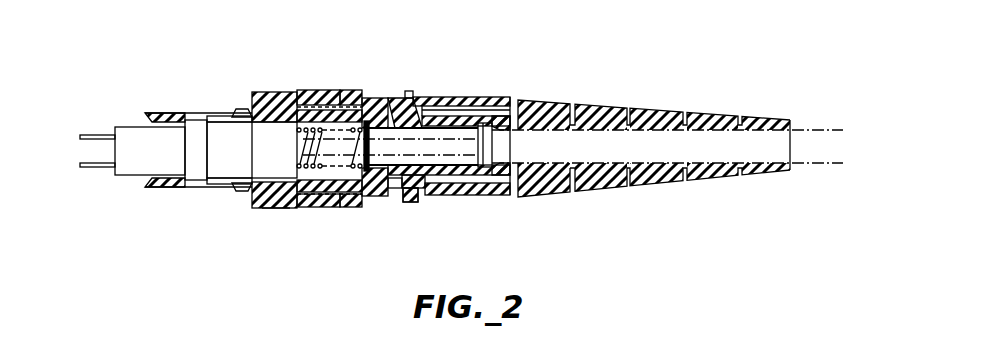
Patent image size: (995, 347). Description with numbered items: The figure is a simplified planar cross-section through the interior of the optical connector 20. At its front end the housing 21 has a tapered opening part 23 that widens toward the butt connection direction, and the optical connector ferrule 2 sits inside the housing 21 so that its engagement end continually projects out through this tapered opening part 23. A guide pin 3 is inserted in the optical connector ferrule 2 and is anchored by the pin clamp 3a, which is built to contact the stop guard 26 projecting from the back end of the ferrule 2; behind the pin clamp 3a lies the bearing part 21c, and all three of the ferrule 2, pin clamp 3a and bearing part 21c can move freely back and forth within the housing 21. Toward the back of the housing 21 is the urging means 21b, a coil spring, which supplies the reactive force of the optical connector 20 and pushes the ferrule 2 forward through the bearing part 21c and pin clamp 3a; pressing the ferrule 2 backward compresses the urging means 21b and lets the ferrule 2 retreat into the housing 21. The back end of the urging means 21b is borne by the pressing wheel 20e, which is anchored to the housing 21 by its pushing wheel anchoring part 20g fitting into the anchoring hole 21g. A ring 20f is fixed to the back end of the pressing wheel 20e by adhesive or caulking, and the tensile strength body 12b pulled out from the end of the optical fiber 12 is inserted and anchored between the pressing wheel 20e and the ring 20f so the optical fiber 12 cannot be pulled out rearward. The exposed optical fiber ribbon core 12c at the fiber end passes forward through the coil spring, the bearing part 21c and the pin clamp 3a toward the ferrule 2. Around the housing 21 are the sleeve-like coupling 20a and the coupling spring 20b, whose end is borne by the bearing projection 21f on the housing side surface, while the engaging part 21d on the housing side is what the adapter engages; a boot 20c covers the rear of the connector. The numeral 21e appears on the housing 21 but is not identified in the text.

The optical connector ferrule 2 is at (113, 176).
The guide pin 3 is at (92, 136).
The pin clamp 3a is at (220, 121).
The optical fiber 12 is at (813, 130).
The tensile strength body 12b is at (533, 117).
The optical fiber ribbon core 12c is at (427, 140).
The optical connector 20 is at (472, 90).
The coupling 20a is at (317, 92).
The coupling spring 20b is at (355, 95).
The boot 20c is at (607, 104).
The pressing wheel 20e is at (423, 186).
The ring 20f is at (469, 194).
The pushing wheel anchoring part 20g is at (397, 202).
The housing 21 is at (218, 187).
The urging means 21b is at (312, 185).
The bearing part 21c is at (274, 122).
The engaging part 21d is at (233, 191).
The housing groove 21e is at (277, 208).
The bearing projection 21f is at (373, 196).
The anchoring hole 21g is at (410, 195).
The tapered opening part 23 is at (146, 184).
The stop guard 26 is at (190, 118).